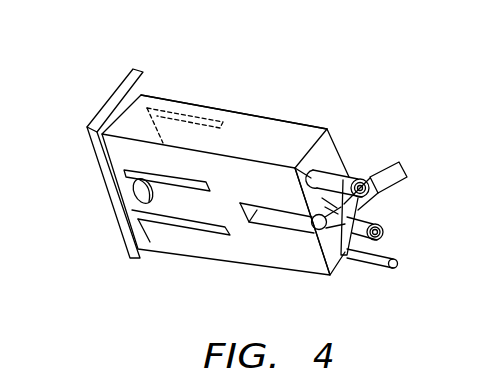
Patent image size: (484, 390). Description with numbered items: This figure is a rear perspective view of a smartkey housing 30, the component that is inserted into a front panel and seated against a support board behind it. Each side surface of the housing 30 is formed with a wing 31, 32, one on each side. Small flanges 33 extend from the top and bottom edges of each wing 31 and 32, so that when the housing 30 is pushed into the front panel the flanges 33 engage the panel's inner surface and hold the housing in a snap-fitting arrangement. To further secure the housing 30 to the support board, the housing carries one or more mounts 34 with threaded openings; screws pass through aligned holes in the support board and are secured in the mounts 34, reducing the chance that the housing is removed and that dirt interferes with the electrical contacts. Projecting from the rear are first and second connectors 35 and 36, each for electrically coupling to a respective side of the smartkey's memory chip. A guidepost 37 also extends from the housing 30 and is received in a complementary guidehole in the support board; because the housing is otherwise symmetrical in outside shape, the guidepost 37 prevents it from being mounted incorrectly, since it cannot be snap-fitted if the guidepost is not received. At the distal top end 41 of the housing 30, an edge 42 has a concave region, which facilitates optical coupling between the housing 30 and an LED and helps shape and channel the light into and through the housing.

The smartkey housing 30 is at (84, 84).
The wing 31 is at (187, 203).
The wing 32 is at (200, 142).
The flanges 33 is at (195, 110).
The mounts 34 is at (342, 181).
The first connector 35 is at (396, 175).
The second connector 36 is at (344, 257).
The guidepost 37 is at (398, 266).
The distal top end 41 is at (305, 133).
The edge 42 is at (323, 147).